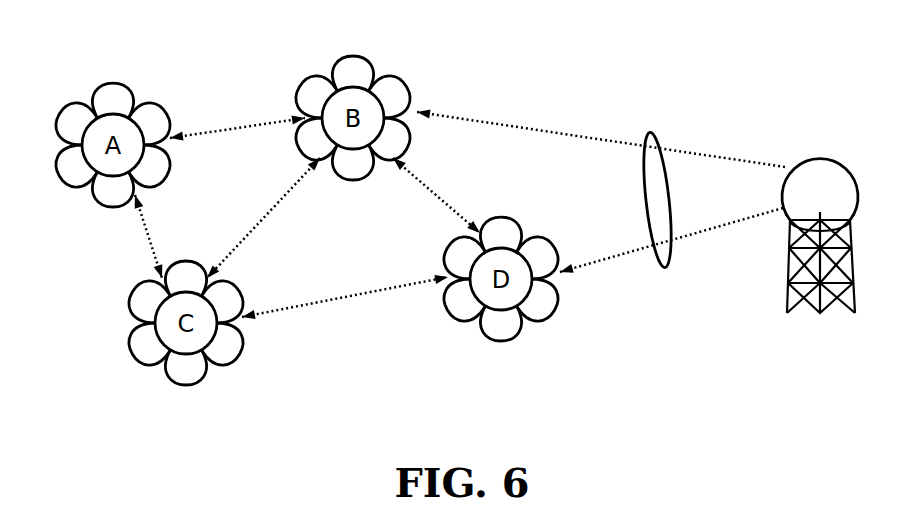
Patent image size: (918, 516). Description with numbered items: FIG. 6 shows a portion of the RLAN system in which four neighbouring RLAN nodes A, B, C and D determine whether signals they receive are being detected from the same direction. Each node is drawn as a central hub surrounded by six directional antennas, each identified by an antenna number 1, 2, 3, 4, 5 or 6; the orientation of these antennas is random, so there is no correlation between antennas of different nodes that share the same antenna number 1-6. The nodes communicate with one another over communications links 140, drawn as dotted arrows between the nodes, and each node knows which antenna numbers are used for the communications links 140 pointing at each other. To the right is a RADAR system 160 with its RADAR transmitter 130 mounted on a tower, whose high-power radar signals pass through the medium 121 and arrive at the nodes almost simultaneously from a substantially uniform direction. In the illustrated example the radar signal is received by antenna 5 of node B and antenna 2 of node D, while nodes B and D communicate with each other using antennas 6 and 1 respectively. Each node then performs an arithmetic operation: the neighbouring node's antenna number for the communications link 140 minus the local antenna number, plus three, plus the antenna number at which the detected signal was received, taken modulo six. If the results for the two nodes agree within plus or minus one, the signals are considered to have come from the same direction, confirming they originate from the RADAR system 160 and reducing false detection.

The communications links 140 is at (245, 125).
The lens / wireless medium 121 is at (648, 133).
The RADAR transmitter 130 is at (832, 160).
The RADAR system 160 is at (834, 193).
The antenna number 1 is at (277, 211).
The antenna number 2 is at (336, 217).
The antenna number 3 is at (352, 242).
The antenna number 4 is at (316, 205).
The antenna number 5 is at (289, 201).
The antenna number 6 is at (263, 204).